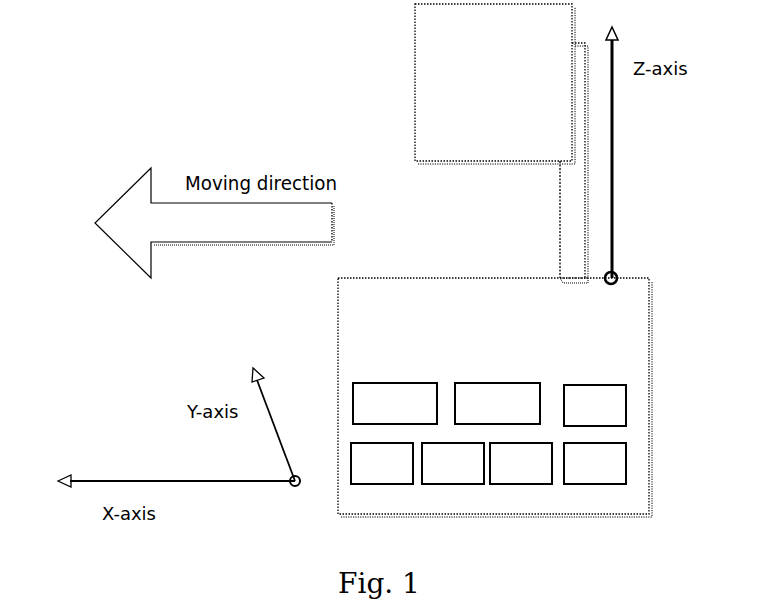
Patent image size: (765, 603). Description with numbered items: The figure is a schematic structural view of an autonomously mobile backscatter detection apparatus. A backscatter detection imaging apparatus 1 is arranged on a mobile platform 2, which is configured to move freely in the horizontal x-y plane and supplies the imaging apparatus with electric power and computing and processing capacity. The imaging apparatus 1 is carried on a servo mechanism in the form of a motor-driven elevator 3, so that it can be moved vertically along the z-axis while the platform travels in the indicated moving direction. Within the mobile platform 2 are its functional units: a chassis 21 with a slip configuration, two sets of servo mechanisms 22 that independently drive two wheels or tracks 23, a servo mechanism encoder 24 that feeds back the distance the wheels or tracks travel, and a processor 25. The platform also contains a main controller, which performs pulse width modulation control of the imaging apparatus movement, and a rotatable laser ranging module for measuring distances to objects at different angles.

The backscatter detection imaging apparatus 1 is at (455, 100).
The mobile platform 2 is at (493, 300).
The elevator 3 is at (572, 232).
The chassis 21 is at (382, 463).
The servo mechanisms 22 is at (453, 463).
The wheels or tracks 23 is at (521, 463).
The servo mechanism encoder 24 is at (595, 463).
The processor 25 is at (595, 405).